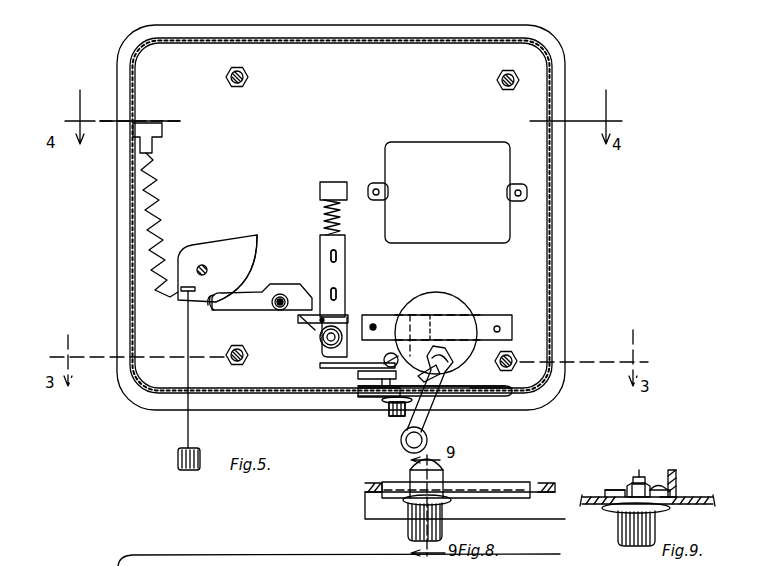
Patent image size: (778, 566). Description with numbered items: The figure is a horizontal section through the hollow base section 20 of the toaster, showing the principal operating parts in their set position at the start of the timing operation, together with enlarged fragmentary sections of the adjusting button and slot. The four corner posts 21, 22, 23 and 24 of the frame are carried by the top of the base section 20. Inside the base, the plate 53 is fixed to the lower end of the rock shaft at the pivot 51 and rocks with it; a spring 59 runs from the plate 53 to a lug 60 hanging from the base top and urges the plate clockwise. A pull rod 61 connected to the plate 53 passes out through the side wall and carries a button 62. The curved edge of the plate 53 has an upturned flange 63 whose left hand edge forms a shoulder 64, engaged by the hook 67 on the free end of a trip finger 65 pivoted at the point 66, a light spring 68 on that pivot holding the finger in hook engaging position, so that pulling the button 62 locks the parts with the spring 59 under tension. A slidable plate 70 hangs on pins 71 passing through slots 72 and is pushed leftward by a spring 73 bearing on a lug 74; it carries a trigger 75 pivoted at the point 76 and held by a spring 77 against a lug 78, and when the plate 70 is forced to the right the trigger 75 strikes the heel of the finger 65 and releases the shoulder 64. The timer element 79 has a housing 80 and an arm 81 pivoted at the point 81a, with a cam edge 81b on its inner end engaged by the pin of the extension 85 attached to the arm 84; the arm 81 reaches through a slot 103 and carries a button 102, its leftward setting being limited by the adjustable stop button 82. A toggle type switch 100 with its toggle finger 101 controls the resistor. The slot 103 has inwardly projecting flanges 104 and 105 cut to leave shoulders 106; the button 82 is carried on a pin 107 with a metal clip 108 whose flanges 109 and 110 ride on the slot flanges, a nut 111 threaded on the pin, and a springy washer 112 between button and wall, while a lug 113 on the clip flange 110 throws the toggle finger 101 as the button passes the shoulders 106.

In FIG. 5, the base section 20 is at (106, 275).
In FIG. 8, the base section 20 is at (355, 513).
In FIG. 9, the base section 20 is at (700, 490).
In FIG. 5, the corner post 21 is at (520, 362).
In FIG. 5, the corner post 22 is at (247, 362).
In FIG. 5, the corner post 23 is at (520, 76).
In FIG. 5, the corner post 24 is at (224, 78).
In FIG. 5, the cam pivot 51 is at (202, 264).
In FIG. 5, the plate 53 is at (225, 256).
In FIG. 5, the spring 59 is at (160, 193).
In FIG. 5, the lug 60 is at (165, 145).
In FIG. 5, the pull rod 61 is at (170, 367).
In FIG. 5, the button 62 is at (177, 460).
In FIG. 5, the upturned flange 63 is at (257, 274).
In FIG. 5, the shoulder 64 is at (218, 300).
In FIG. 5, the trip finger 65 is at (245, 311).
In FIG. 5, the pivot point 66 is at (280, 311).
In FIG. 5, the hook 67 is at (213, 312).
In FIG. 5, the light spring 68 is at (281, 294).
In FIG. 5, the plate 70 is at (346, 276).
In FIG. 5, the pins 71 is at (337, 291).
In FIG. 5, the slots 72 is at (337, 300).
In FIG. 5, the spring 73 is at (322, 222).
In FIG. 5, the lug 74 is at (318, 193).
In FIG. 5, the trigger 75 is at (348, 320).
In FIG. 5, the pivot point 76 is at (321, 317).
In FIG. 5, the spring 77 is at (320, 341).
In FIG. 5, the lug 78 is at (318, 329).
In FIG. 5, the timer element 79 is at (467, 300).
In FIG. 5, the housing 80 is at (437, 318).
In FIG. 5, the arm 81 is at (425, 412).
In FIG. 5, the pivot point 81a is at (444, 366).
In FIG. 5, the cam surface 81b is at (450, 325).
In FIG. 5, the button 82 is at (390, 417).
In FIG. 5, the outwardly projecting arm 84 is at (437, 335).
In FIG. 5, the extension 85 is at (350, 364).
In FIG. 5, the switch 100 is at (350, 379).
In FIG. 5, the toggle finger 101 is at (370, 391).
In FIG. 5, the button 102 is at (403, 445).
In FIG. 5, the slot 103 is at (468, 398).
In FIG. 9, the lower flange 104 is at (610, 492).
In FIG. 5, the upper flange 105 is at (505, 386).
In FIG. 9, the upper flange 105 is at (672, 495).
In FIG. 5, the shoulders 106 is at (431, 397).
In FIG. 8, the shoulders 106 is at (452, 484).
In FIG. 9, the pin 107 is at (638, 476).
In FIG. 9, the metal clip 108 is at (630, 484).
In FIG. 9, the clip flange 109 is at (620, 488).
In FIG. 9, the upper clip flange 110 is at (660, 488).
In FIG. 9, the nut 111 is at (616, 509).
In FIG. 5, the springy washer 112 is at (383, 408).
In FIG. 8, the springy washer 112 is at (408, 510).
In FIG. 9, the springy washer 112 is at (656, 508).
In FIG. 8, the lug 113 is at (433, 466).
In FIG. 9, the lug 113 is at (672, 469).